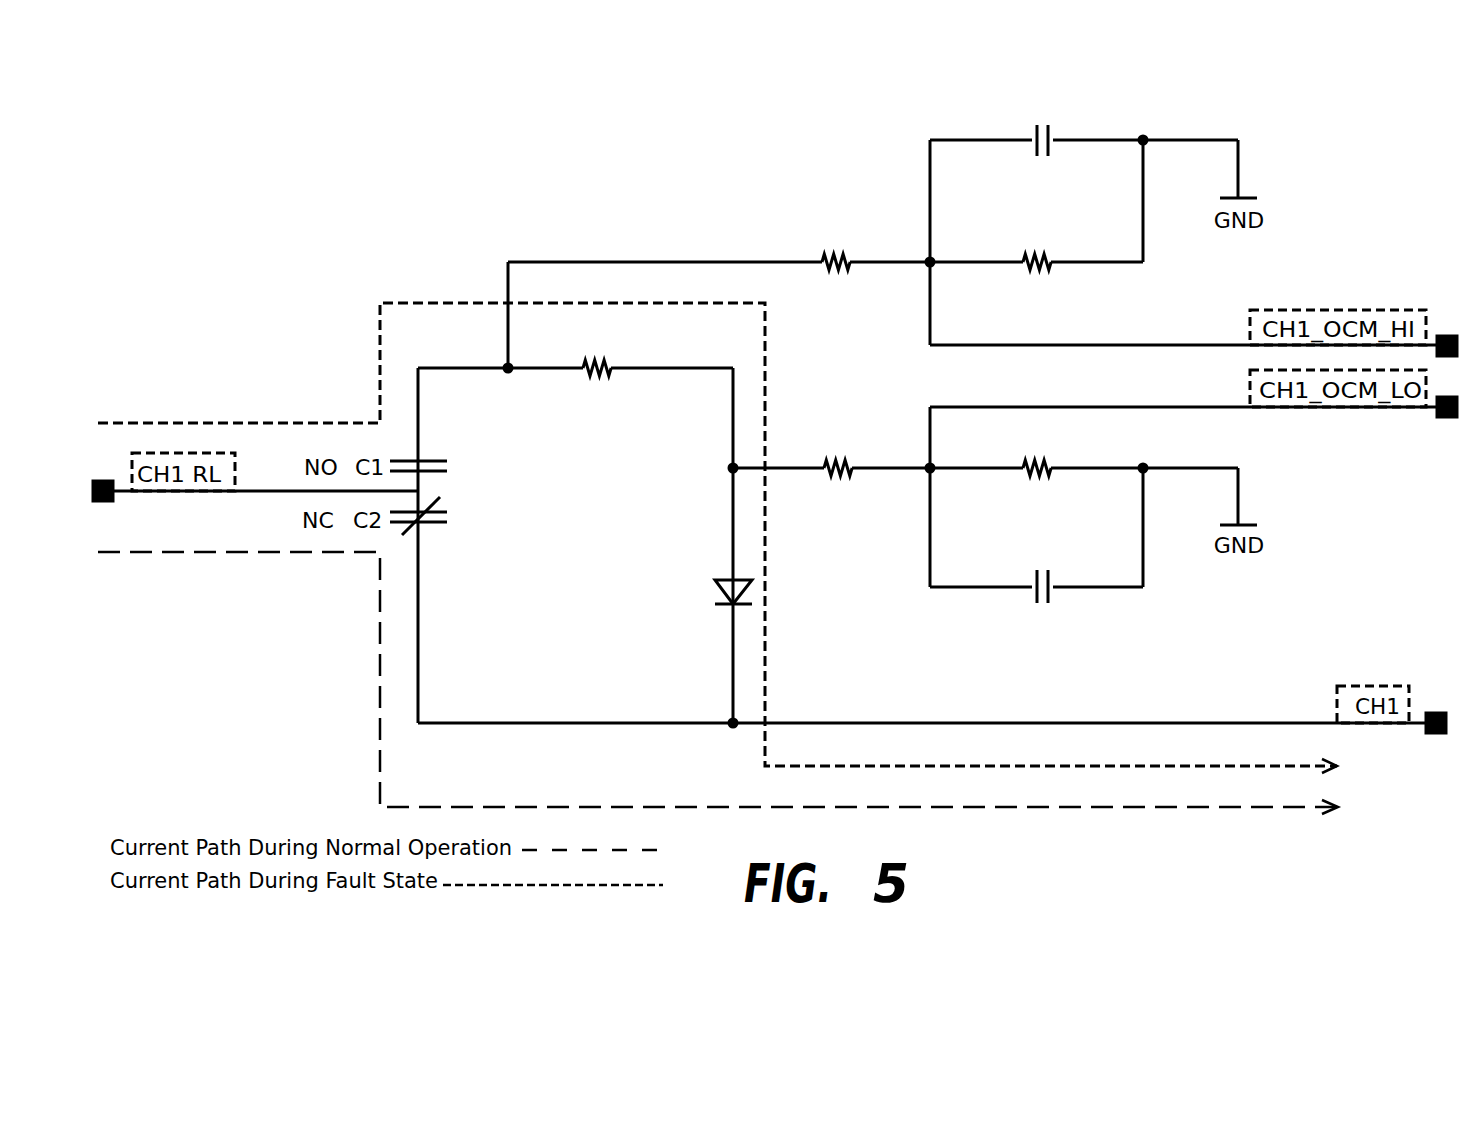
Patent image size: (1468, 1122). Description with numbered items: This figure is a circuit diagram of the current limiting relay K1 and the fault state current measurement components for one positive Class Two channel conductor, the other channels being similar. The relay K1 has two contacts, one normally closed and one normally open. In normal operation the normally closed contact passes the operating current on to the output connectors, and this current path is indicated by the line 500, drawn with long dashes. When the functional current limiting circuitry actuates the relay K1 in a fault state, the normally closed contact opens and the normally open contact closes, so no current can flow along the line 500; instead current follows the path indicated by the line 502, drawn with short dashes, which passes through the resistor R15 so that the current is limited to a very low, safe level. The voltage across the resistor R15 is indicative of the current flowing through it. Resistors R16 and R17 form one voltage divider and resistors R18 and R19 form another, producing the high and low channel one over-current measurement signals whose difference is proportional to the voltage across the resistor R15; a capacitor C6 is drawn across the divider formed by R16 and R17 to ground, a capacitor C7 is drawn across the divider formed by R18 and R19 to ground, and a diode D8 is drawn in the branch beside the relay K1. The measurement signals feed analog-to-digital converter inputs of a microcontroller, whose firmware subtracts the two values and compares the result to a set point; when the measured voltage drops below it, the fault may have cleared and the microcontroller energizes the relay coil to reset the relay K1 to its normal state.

The line 500 is at (263, 552).
The line 502 is at (262, 422).
The current limiting relay K1 is at (561, 545).
The resistor R15 is at (597, 424).
The resistor R16 is at (835, 217).
The resistor R17 is at (1041, 298).
The resistor R18 is at (838, 510).
The resistor R19 is at (1041, 510).
The capacitor C6 is at (1041, 99).
The capacitor C7 is at (1041, 631).
The diode D8 is at (679, 593).